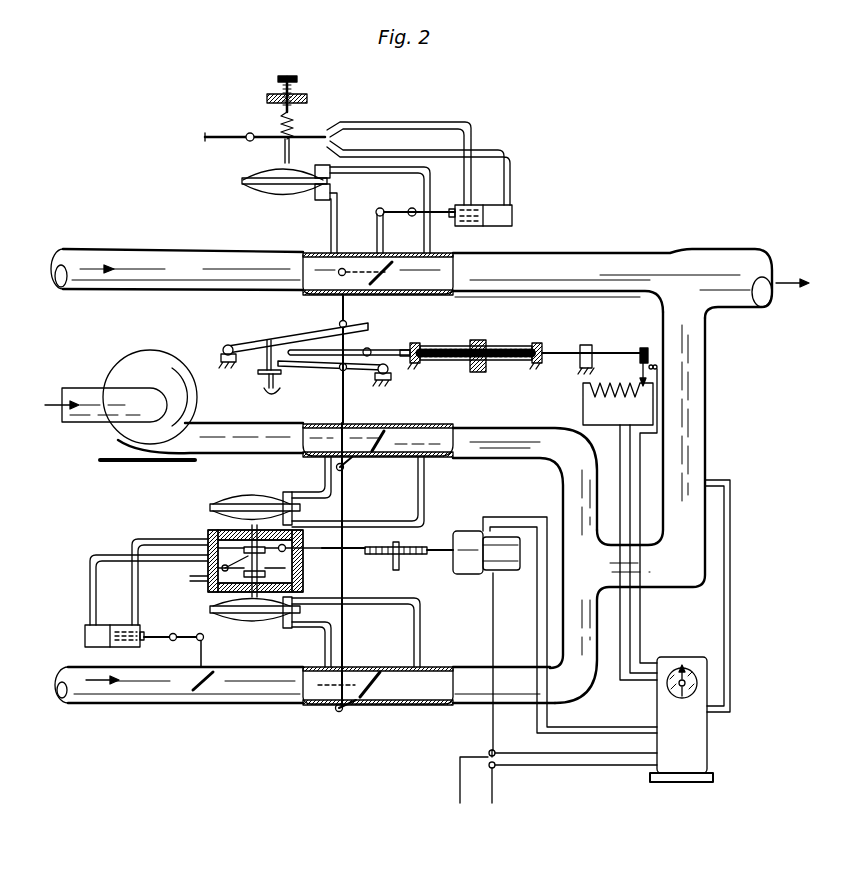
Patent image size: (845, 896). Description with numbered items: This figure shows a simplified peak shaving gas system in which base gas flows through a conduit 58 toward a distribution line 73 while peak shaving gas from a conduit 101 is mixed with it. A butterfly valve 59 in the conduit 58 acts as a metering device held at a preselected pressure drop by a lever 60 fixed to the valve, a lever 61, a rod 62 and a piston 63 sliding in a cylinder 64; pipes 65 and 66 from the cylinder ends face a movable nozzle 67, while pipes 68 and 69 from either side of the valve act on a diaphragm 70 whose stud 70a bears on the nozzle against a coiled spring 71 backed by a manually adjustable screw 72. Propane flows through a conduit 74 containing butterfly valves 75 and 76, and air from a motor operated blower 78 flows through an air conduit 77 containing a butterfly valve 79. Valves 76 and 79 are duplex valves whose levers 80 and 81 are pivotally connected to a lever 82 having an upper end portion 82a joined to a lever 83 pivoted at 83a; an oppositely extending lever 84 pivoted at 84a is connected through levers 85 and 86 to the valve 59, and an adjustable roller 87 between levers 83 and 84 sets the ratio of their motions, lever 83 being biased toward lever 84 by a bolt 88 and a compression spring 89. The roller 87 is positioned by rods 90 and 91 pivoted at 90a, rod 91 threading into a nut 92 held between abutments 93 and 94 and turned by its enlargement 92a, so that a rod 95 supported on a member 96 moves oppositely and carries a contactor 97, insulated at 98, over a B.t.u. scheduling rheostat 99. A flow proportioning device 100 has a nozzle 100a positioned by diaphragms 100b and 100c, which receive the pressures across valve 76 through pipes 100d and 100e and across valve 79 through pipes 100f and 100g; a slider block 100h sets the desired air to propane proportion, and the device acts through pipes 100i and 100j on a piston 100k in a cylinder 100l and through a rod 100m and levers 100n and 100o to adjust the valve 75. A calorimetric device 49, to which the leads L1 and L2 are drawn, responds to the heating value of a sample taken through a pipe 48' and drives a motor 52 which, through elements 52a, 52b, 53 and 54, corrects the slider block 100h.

The pipe 48' is at (740, 596).
The calorimetric device 49 is at (598, 575).
The motor 52 is at (515, 572).
The element 52a is at (470, 531).
The element 52b is at (455, 553).
The element 53 is at (397, 571).
The element 54 is at (372, 556).
The conduit 58 is at (128, 245).
The butterfly valve 59 is at (388, 293).
The lever 60 is at (395, 233).
The lever 61 is at (411, 208).
The rod 62 is at (445, 215).
The piston 63 is at (486, 226).
The cylinder 64 is at (513, 213).
The pipe 65 is at (511, 172).
The pipe 66 is at (472, 133).
The movable jet or nozzle 67 is at (205, 137).
The pipe 68 is at (328, 236).
The pipe 69 is at (380, 210).
The diaphragm 70 is at (242, 182).
The stud 70a is at (283, 150).
The coiled spring 71 is at (282, 128).
The manually adjustable screw or bolt 72 is at (278, 80).
The distribution line 73 is at (708, 260).
The conduit 74 is at (280, 706).
The butterfly valve 75 is at (207, 698).
The butterfly valve 76 is at (385, 700).
The air conduit 77 is at (218, 455).
The motor operated blower or pump 78 is at (108, 378).
The butterfly valve 79 is at (382, 453).
The lever 80 is at (341, 713).
The lever 81 is at (359, 485).
The lever 82 is at (348, 651).
The upper end portion 82a is at (341, 404).
The lever 83 is at (335, 371).
The pivot 83a is at (382, 381).
The lever 84 is at (228, 344).
The pivot 84a is at (221, 358).
The lever 85 is at (340, 321).
The lever 86 is at (365, 250).
The adjustable slider block or roller 87 is at (283, 343).
The headed rod or bolt 88 is at (266, 396).
The coiled compression spring 89 is at (258, 378).
The link or rod 90 is at (375, 350).
The pivotal connection 90a is at (420, 348).
The link or rod 91 is at (372, 358).
The internally threaded nut 92 is at (515, 345).
The intermediate enlargement 92a is at (478, 373).
The abutment 93 is at (418, 366).
The abutment 94 is at (535, 365).
The rod 95 is at (558, 360).
The member 96 is at (585, 345).
The contactor 97 is at (638, 372).
The insulation 98 is at (643, 347).
The peak shaving gas B. t. u. scheduling rheostat 99 is at (604, 400).
The flow proportioning device 100 is at (212, 516).
The nozzle 100a is at (198, 578).
The diaphragm 100b is at (343, 617).
The diaphragm 100c is at (218, 503).
The pipe 100d is at (327, 646).
The pipe 100e is at (424, 651).
The pipe 100f is at (322, 490).
The pipe 100g is at (432, 481).
The slider block 100h is at (223, 572).
The pipe 100i is at (135, 542).
The pipe 100j is at (90, 580).
The piston 100k is at (105, 658).
The cylinder 100l is at (88, 628).
The rod 100m is at (170, 641).
The lever 100n is at (197, 641).
The lever 100o is at (205, 655).
The conduit 101 is at (707, 436).
The power line L1 is at (468, 799).
The power line L2 is at (570, 707).